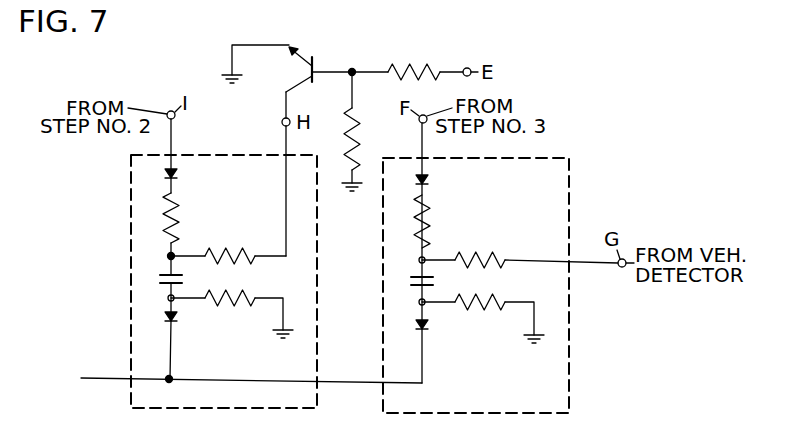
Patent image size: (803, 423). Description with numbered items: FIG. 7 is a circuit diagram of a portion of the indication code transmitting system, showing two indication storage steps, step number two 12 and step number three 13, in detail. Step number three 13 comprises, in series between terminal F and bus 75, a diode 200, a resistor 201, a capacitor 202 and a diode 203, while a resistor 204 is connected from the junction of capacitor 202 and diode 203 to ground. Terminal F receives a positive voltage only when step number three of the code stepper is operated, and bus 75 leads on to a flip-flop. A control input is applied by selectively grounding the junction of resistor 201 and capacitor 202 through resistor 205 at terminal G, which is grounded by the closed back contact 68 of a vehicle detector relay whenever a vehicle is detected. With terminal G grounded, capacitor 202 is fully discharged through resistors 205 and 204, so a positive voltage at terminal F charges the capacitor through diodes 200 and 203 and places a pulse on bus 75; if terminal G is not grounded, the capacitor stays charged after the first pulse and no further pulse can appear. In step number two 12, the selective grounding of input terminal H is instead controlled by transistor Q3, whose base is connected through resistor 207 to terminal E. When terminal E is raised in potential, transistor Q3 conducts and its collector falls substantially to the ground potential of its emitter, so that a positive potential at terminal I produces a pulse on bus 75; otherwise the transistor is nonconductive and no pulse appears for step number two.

The transistor Q3 is at (312, 60).
The resistor 207 is at (405, 64).
The indication storage step I2 12 is at (130, 284).
The indication storage step I3 13 is at (454, 268).
The bus 75 is at (100, 378).
The back contact 68 is at (593, 265).
The diode 200 is at (428, 178).
The resistor 201 is at (430, 223).
The capacitor 202 is at (433, 281).
The diode 203 is at (425, 329).
The resistor 204 is at (483, 318).
The resistor 205 is at (499, 262).